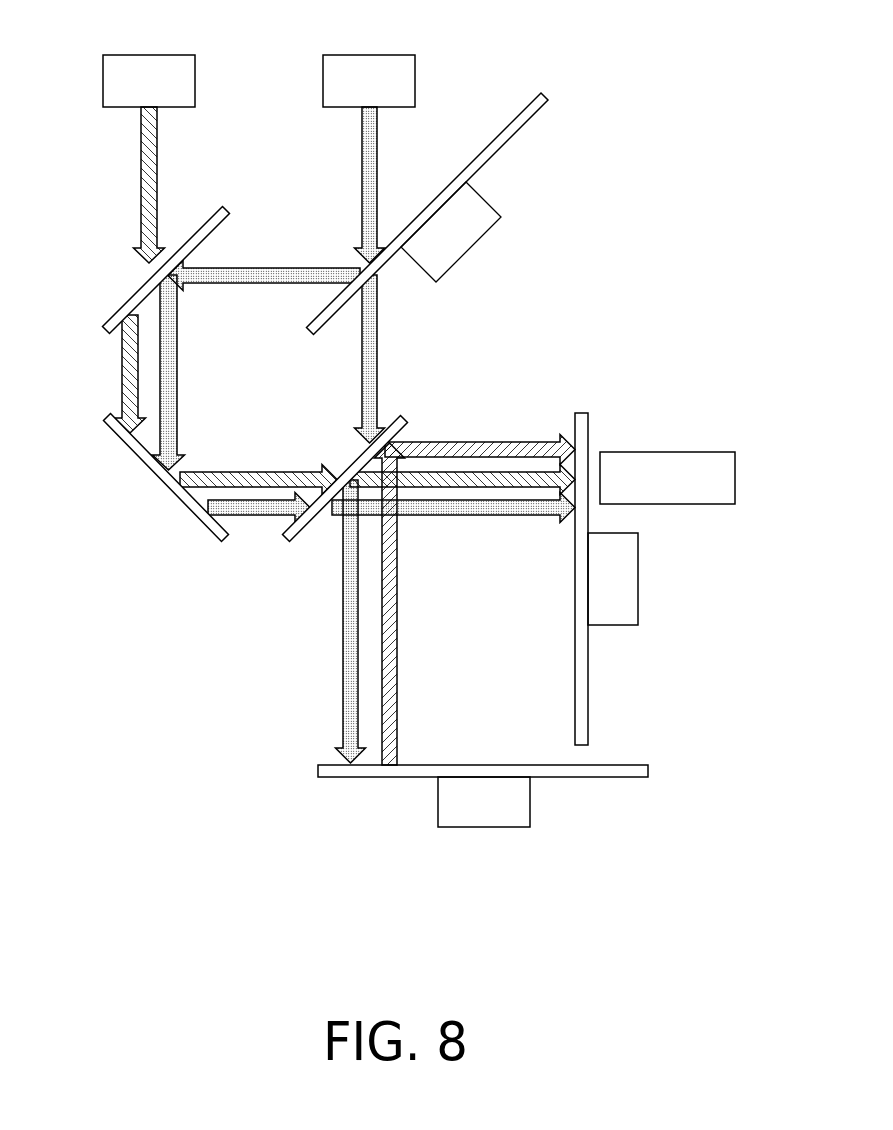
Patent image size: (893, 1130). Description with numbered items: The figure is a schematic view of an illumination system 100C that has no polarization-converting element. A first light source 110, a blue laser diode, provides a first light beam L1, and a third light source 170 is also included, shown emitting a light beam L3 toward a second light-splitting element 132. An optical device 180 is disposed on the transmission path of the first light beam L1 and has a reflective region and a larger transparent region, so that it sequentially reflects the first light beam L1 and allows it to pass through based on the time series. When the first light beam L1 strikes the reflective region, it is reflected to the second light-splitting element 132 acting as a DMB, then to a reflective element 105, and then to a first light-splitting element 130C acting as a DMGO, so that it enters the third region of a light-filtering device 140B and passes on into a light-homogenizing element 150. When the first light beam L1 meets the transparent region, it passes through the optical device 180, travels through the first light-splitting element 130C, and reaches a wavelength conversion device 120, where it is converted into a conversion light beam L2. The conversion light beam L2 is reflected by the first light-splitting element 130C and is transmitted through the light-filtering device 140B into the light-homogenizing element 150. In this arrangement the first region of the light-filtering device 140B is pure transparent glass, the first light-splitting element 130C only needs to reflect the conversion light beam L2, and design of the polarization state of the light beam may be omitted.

The illumination system 100C is at (763, 942).
The first light source 110 is at (372, 72).
The third light source 170 is at (150, 72).
The optical device 180 is at (460, 240).
The second light-splitting element 132 is at (128, 301).
The reflective element 105 is at (131, 443).
The first light-splitting element 130C is at (406, 414).
The light-homogenizing element 150 is at (672, 468).
The light-filtering device 140B is at (612, 610).
The wavelength conversion device 120 is at (487, 812).
The first light beam L1 is at (361, 165).
The conversion light beam L2 is at (393, 618).
The third light L3 is at (140, 165).